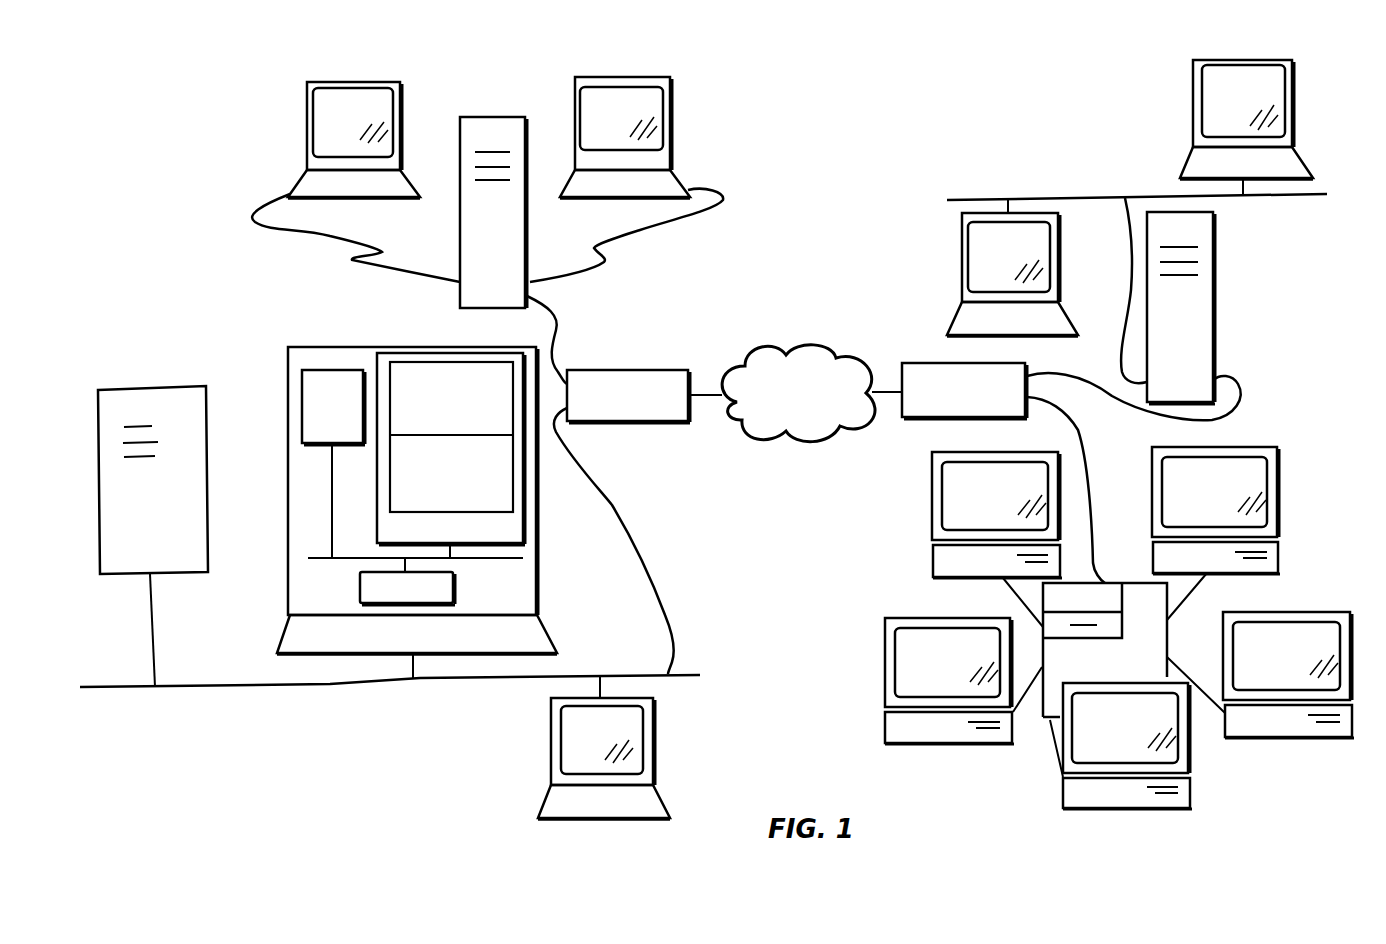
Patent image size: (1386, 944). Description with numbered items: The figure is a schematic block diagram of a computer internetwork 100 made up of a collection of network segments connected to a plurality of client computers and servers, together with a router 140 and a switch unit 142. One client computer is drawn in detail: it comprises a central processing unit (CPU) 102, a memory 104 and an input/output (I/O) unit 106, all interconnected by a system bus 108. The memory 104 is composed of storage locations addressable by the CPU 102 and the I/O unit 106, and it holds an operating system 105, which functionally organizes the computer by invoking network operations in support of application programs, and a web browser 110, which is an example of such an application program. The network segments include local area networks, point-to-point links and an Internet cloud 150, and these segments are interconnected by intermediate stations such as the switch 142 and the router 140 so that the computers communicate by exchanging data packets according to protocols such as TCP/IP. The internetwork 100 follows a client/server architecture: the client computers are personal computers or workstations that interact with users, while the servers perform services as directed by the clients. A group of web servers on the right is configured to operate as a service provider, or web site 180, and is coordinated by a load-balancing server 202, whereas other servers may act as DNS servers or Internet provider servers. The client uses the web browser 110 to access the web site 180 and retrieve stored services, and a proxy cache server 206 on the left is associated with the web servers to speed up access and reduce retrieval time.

The computer internetwork 100 is at (274, 128).
The central processing unit 102 is at (320, 427).
The memory 104 is at (451, 449).
The operating system 105 is at (439, 504).
The input/output unit 106 is at (444, 598).
The system bus 108 is at (322, 558).
The web browser 110 is at (439, 430).
The router 140 is at (617, 371).
The switch unit 142 is at (937, 363).
The Internet cloud 150 is at (784, 423).
The service provider/web site 180 is at (982, 798).
The load-balancing server 202 is at (1138, 597).
The proxy cache server 206 is at (177, 389).